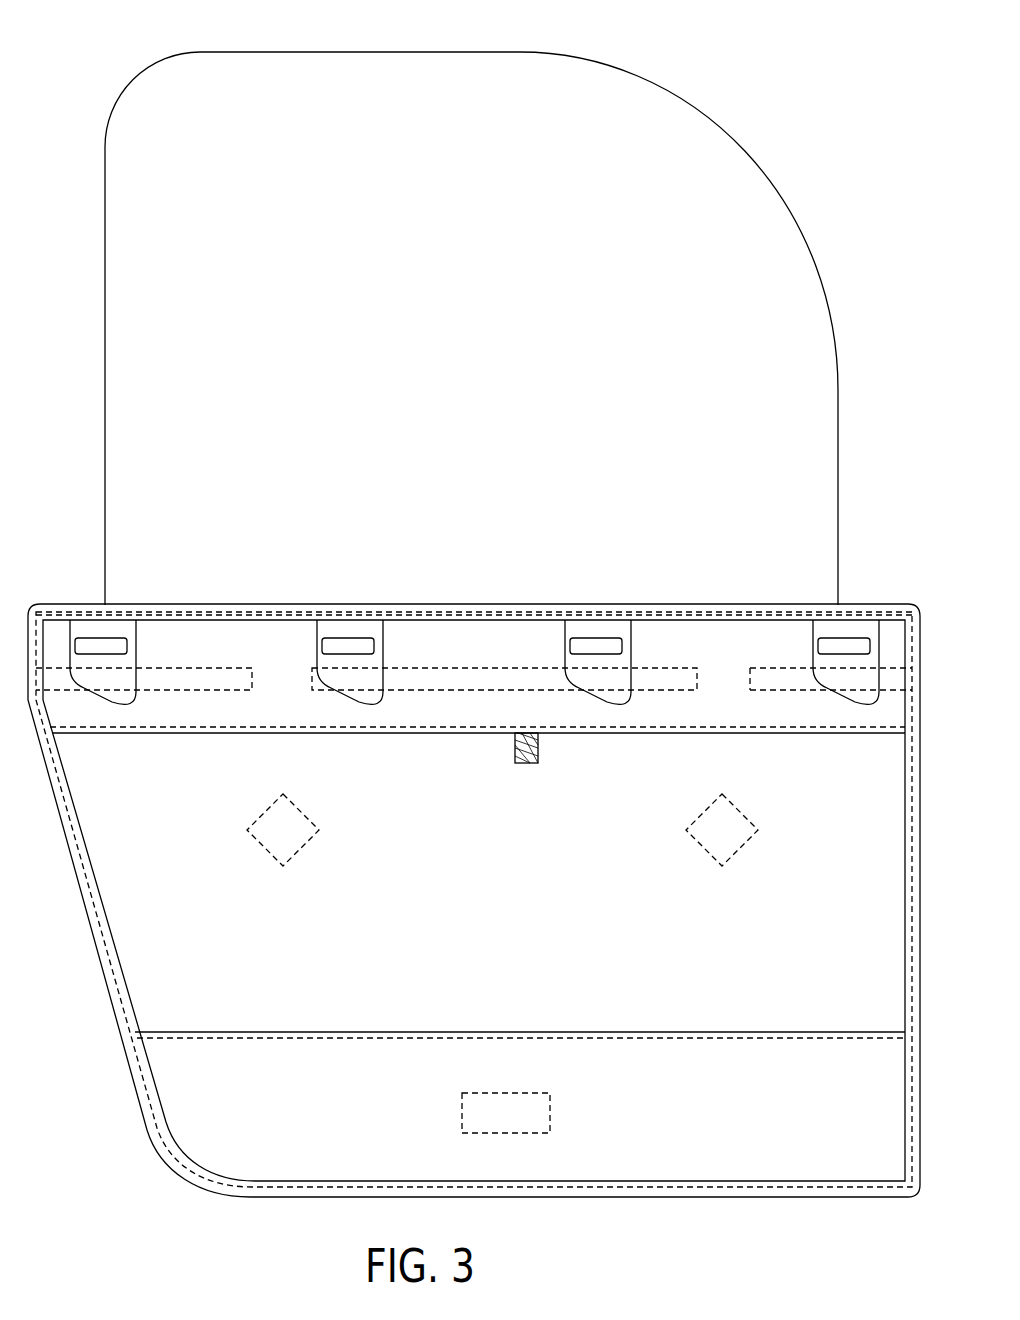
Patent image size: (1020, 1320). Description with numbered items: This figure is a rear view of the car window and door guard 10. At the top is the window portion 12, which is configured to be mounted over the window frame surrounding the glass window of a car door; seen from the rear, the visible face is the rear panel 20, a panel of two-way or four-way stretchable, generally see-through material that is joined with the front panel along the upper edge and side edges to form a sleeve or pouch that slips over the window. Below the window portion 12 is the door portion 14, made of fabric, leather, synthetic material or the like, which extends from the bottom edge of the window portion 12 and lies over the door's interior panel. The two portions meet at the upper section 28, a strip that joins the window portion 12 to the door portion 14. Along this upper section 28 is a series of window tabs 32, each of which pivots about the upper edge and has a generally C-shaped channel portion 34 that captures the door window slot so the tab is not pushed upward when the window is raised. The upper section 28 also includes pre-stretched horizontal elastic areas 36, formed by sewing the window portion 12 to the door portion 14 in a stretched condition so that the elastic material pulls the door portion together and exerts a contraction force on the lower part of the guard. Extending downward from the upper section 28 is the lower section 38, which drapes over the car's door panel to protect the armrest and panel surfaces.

The car window and door guard 10 is at (790, 86).
The window portion 12 is at (121, 280).
The rear panel 20 is at (121, 366).
The door portion 14 is at (131, 873).
The upper section 28 is at (228, 617).
The channel portion 34 is at (353, 604).
The window tabs 32 is at (113, 693).
The pre-stretched horizontal elastic areas 36 is at (488, 678).
The lower section 38 is at (166, 960).